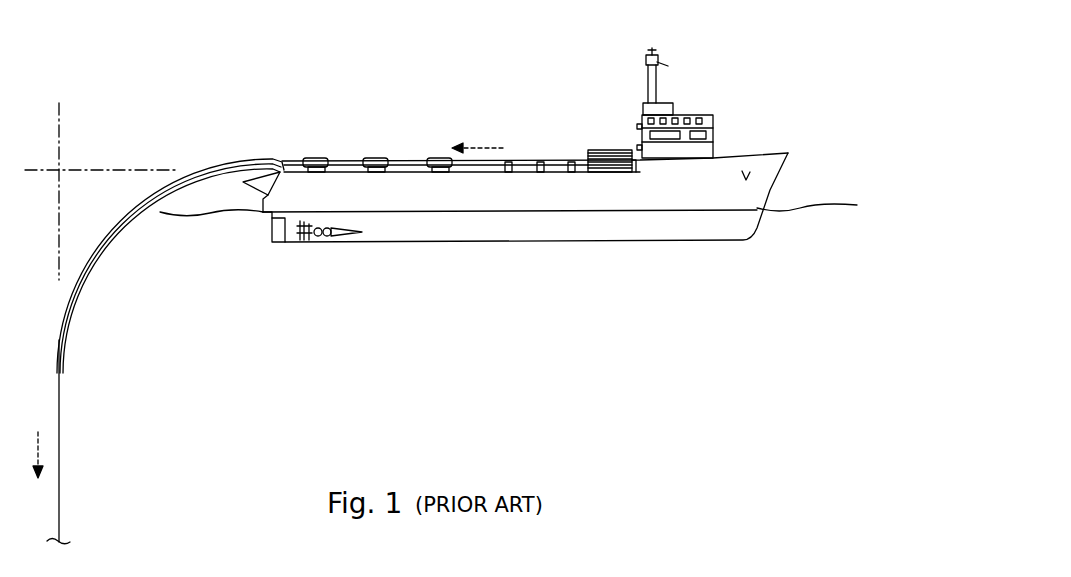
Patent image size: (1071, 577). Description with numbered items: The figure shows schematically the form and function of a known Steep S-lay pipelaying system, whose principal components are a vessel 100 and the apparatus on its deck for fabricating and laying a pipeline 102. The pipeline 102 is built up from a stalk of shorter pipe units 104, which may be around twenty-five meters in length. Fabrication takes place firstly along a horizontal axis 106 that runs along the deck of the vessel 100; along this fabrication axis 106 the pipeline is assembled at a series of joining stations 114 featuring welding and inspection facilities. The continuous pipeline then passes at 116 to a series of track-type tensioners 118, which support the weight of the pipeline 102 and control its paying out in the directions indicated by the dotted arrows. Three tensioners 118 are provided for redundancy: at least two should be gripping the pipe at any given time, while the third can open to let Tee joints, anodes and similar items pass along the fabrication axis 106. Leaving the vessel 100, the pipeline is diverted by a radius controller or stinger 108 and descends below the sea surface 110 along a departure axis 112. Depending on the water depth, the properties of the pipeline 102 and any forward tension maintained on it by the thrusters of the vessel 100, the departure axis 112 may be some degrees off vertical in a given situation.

The vessel 100 is at (725, 228).
The pipeline 102 is at (130, 402).
The pipe units 104 is at (620, 148).
The horizontal axis 106 is at (140, 170).
The stinger 108 is at (137, 220).
The sea surface 110 is at (221, 220).
The departure axis 112 is at (60, 125).
The joining stations 114 is at (572, 162).
The pass point 116 is at (475, 162).
The track-type tensioners 118 is at (440, 158).